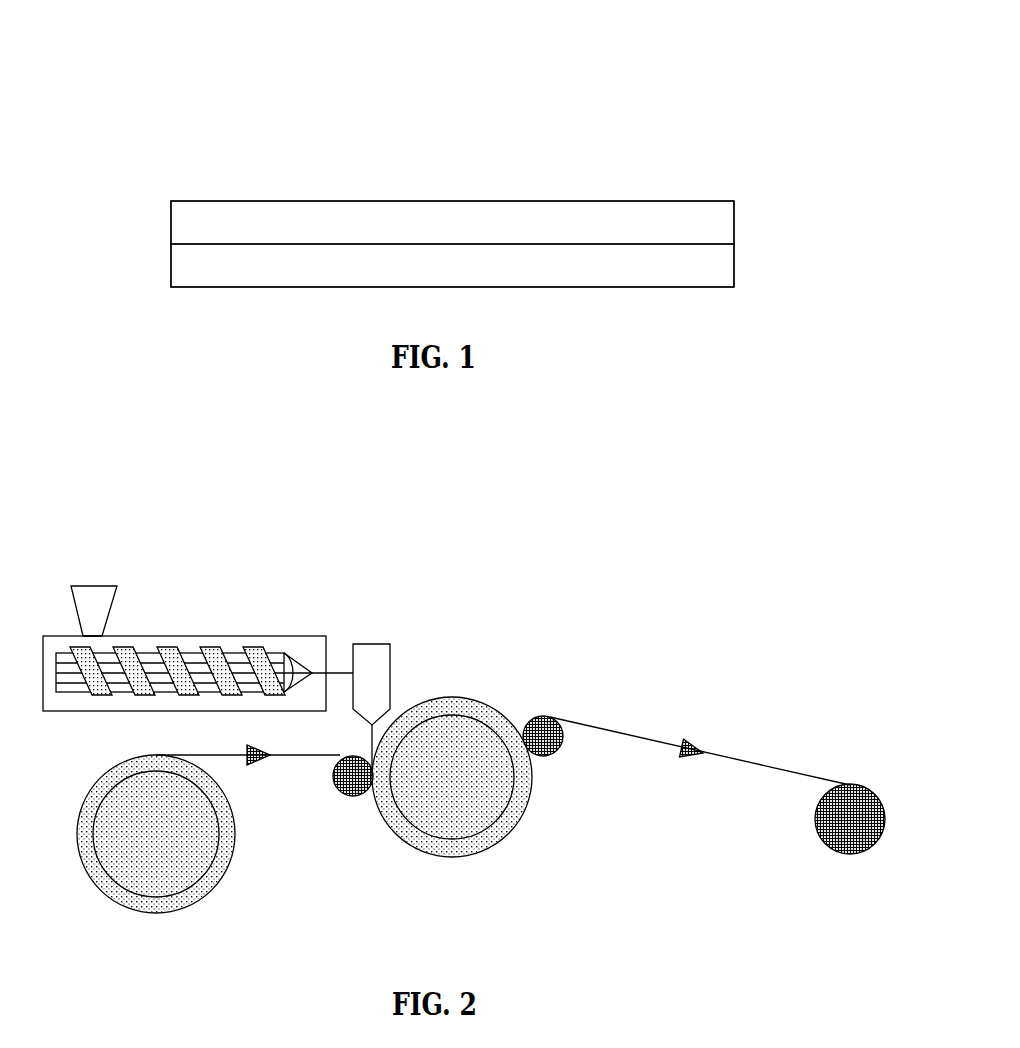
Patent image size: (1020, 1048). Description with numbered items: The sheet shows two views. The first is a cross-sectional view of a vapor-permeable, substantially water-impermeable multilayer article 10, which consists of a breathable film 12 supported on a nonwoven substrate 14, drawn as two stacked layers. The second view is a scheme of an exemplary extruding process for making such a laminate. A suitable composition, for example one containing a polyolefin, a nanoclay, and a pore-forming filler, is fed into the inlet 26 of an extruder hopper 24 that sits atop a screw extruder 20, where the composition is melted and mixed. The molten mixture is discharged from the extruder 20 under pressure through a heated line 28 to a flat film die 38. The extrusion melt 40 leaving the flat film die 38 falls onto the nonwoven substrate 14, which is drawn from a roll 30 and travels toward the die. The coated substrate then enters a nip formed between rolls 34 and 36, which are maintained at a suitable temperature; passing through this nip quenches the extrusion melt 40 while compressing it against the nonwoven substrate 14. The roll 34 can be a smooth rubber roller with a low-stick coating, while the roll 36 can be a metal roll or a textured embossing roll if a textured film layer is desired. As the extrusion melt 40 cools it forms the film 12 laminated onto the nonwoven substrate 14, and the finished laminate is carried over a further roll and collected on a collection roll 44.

In FIG. 1, the multilayer article 10 is at (641, 110).
In FIG. 1, the breathable film 12 is at (734, 220).
In FIG. 1, the nonwoven substrate 14 is at (734, 268).
In FIG. 2, the nonwoven substrate 14 is at (248, 769).
In FIG. 2, the screw extruder 20 is at (272, 633).
In FIG. 2, the extruder hopper 24 is at (110, 610).
In FIG. 2, the inlet 26 is at (97, 583).
In FIG. 2, the heated line 28 is at (340, 666).
In FIG. 2, the roll 30 is at (217, 887).
In FIG. 2, the roll 34 is at (342, 797).
In FIG. 2, the roll 36 is at (497, 837).
In FIG. 2, the flat film die 38 is at (392, 672).
In FIG. 2, the extrusion melt 40 is at (370, 738).
In FIG. 2, the collection roll 44 is at (835, 853).